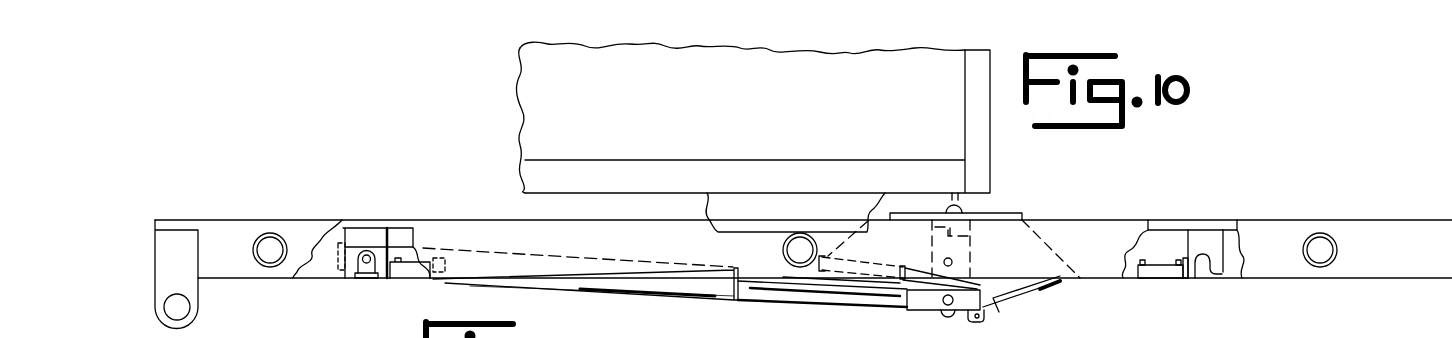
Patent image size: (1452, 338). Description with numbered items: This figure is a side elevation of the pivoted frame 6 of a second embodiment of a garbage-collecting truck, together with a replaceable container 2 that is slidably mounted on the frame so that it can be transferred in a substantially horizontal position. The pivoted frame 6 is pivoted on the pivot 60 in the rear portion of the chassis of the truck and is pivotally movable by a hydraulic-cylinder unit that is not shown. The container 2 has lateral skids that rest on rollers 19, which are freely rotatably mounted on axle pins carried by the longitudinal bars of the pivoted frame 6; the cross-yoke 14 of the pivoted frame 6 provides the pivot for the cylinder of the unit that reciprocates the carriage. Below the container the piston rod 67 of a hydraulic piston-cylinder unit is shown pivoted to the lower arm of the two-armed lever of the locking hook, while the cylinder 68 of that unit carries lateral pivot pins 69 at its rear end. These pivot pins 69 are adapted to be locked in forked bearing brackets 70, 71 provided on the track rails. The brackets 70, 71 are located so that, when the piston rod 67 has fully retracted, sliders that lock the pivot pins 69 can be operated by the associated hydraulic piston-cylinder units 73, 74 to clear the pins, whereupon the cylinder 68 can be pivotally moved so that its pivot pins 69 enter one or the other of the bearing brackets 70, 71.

The replaceable container 2 is at (770, 116).
The pivoted frame 6 is at (1113, 206).
The cross-yoke 14 is at (1323, 259).
The rollers 19 is at (282, 266).
The pivot 60 is at (173, 308).
The piston rod 67 is at (857, 302).
The cylinder 68 is at (650, 286).
The lateral pivot pins 69 is at (367, 254).
The forked bearing bracket 70 is at (350, 278).
The forked bearing bracket 71 is at (1200, 278).
The hydraulic piston-cylinder unit 73 is at (1155, 276).
The hydraulic piston-cylinder unit 74 is at (408, 267).